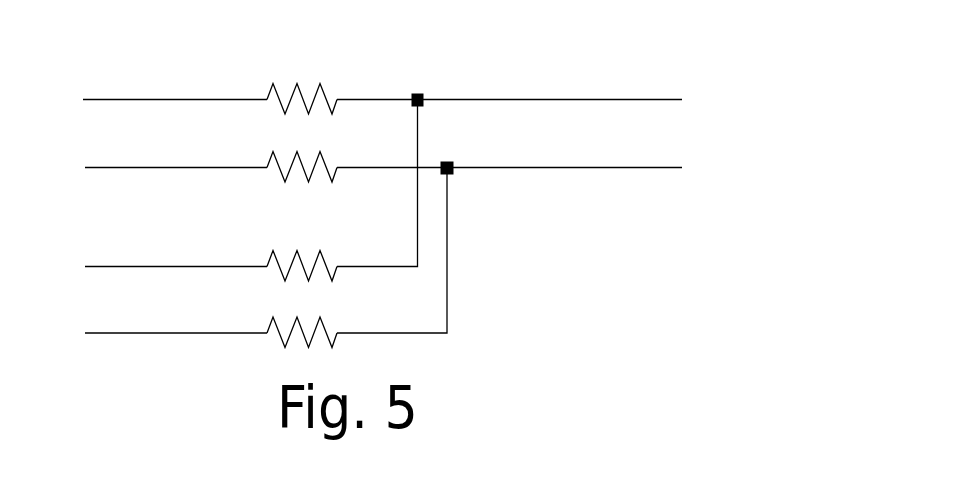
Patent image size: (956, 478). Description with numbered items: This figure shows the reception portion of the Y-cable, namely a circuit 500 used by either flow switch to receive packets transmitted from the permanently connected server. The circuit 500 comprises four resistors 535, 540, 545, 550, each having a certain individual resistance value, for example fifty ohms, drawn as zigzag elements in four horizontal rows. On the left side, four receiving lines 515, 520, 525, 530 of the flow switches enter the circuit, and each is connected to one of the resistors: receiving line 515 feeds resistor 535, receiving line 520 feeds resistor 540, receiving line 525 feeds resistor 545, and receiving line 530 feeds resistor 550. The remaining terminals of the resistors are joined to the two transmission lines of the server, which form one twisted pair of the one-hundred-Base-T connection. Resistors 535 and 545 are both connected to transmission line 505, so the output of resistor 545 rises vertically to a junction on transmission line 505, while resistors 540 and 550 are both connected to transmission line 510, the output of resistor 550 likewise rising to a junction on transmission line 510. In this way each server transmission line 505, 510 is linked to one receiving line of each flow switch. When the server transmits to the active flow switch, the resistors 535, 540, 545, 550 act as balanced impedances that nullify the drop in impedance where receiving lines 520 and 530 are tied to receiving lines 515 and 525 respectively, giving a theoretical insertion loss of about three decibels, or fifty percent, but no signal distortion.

The circuit 500 is at (589, 294).
The transmission line 505 is at (582, 98).
The transmission line 510 is at (582, 171).
The receiving line 515 is at (158, 98).
The receiving line 520 is at (153, 170).
The receiving line 525 is at (158, 265).
The receiving line 530 is at (154, 334).
The resistor 535 is at (297, 83).
The resistor 540 is at (297, 152).
The resistor 545 is at (297, 251).
The resistor 550 is at (297, 318).